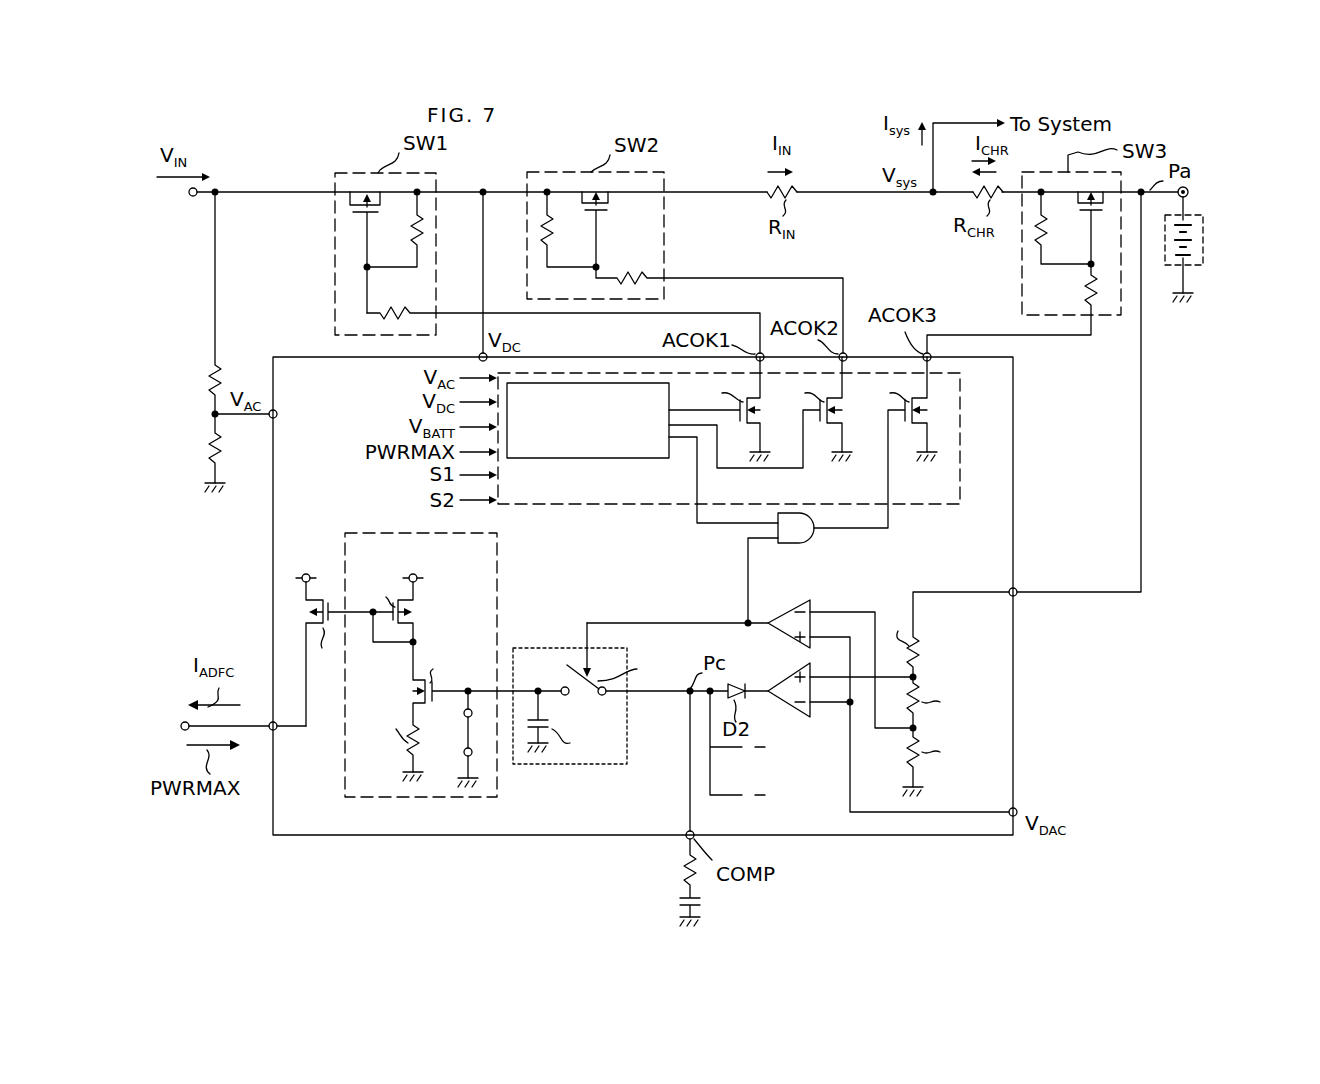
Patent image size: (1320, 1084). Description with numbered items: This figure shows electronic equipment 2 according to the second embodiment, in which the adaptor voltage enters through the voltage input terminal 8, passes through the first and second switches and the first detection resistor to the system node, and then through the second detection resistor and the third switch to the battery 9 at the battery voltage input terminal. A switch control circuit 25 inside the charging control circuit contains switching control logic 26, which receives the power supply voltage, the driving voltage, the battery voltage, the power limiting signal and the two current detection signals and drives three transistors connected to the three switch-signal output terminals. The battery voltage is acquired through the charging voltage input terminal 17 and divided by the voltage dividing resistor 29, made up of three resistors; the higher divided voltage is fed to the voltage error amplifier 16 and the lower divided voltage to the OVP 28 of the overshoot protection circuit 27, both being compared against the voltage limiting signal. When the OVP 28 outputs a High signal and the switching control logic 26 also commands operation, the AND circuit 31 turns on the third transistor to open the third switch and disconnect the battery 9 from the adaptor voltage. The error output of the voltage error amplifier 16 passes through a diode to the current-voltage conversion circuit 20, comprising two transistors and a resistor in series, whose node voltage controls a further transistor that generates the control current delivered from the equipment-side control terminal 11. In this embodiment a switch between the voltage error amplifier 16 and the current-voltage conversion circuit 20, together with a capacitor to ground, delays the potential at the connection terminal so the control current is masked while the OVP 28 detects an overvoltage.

The electronic equipment 2 is at (1128, 822).
The voltage input terminal 8 is at (189, 192).
The battery 9 is at (1215, 234).
The equipment-side control terminal 11 is at (181, 726).
The voltage error amplifier 16 is at (789, 713).
The charging voltage input terminal 17 is at (1017, 590).
The current-voltage conversion circuit 20 is at (345, 742).
The switch control circuit 25 is at (747, 442).
The switching control logic 26 is at (585, 459).
The overshoot protection circuit 27 is at (572, 581).
The OVP (over voltage protection circuit) 28 is at (785, 611).
The voltage dividing resistor 29 is at (942, 649).
The AND circuit 31 is at (814, 522).